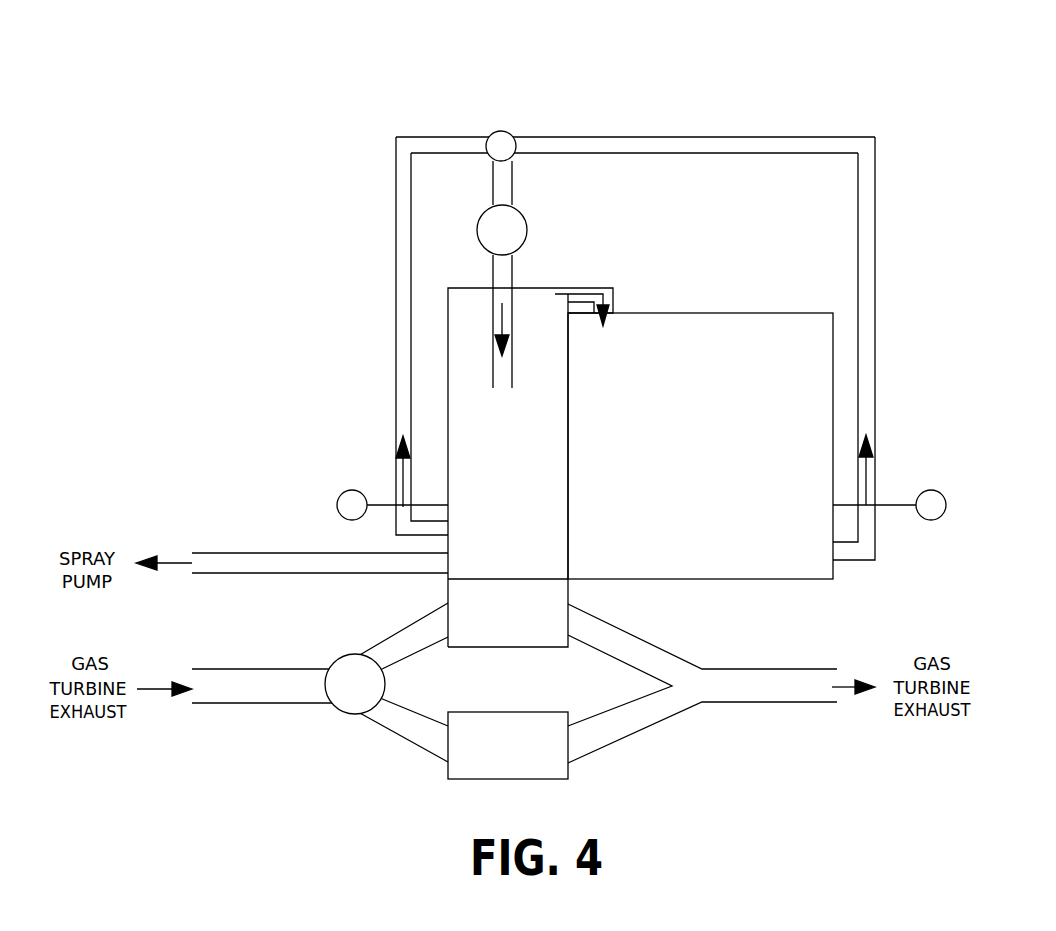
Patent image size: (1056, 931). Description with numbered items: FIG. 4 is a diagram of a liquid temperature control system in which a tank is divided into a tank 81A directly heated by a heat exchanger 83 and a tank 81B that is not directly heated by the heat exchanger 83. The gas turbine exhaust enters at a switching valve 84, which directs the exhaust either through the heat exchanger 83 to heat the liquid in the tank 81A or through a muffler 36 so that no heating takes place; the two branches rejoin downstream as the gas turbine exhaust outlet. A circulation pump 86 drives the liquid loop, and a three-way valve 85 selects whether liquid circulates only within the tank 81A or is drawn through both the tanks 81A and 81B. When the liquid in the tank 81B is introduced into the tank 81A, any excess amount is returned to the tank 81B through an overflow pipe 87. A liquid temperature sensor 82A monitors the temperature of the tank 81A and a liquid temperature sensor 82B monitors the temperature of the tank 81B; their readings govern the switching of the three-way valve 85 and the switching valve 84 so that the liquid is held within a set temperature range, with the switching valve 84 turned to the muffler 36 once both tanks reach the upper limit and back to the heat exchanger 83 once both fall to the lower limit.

The muffler 36 is at (572, 778).
The tank 81A is at (465, 397).
The tank 81B is at (808, 385).
The liquid temperature sensor 82A is at (337, 505).
The liquid temperature sensor 82B is at (946, 505).
The heat exchanger 83 is at (473, 647).
The switching valve 84 is at (335, 716).
The three-way valve 85 is at (502, 131).
The circulation pump 86 is at (527, 215).
The overflow pipe 87 is at (615, 290).